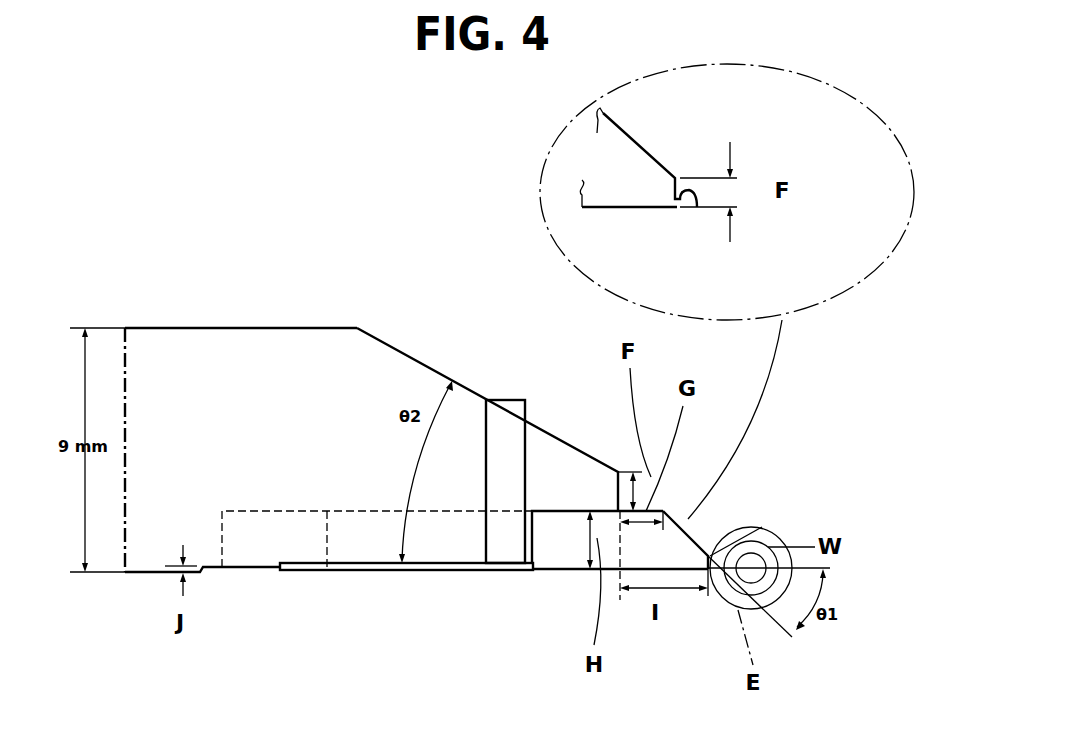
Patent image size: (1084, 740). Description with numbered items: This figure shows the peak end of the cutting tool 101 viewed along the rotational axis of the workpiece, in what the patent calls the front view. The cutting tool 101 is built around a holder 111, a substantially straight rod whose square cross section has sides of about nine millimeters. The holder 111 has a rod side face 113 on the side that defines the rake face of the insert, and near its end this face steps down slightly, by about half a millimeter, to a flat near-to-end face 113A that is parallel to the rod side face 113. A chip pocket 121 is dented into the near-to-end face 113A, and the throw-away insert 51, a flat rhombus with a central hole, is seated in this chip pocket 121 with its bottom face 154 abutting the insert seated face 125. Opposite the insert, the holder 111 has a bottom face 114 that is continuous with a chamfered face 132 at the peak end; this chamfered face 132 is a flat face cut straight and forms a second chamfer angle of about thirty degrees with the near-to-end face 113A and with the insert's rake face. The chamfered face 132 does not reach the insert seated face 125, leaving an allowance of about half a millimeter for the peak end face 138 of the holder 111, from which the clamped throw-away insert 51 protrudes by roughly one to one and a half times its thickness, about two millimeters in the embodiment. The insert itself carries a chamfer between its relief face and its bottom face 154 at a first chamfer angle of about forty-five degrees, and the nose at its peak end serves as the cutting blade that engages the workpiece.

The cutting tool 101 is at (178, 321).
The holder 111 is at (170, 392).
The rod side face 113 is at (145, 574).
The near-to-end face 113A is at (260, 569).
The bottom face 114 is at (268, 327).
The chip pocket 121 is at (360, 513).
The insert seated face 125 is at (458, 513).
The chamfered face 132 is at (555, 437).
The peak end face 138 is at (612, 483).
The throw-away insert 51 is at (560, 578).
The bottom face 154 is at (342, 511).